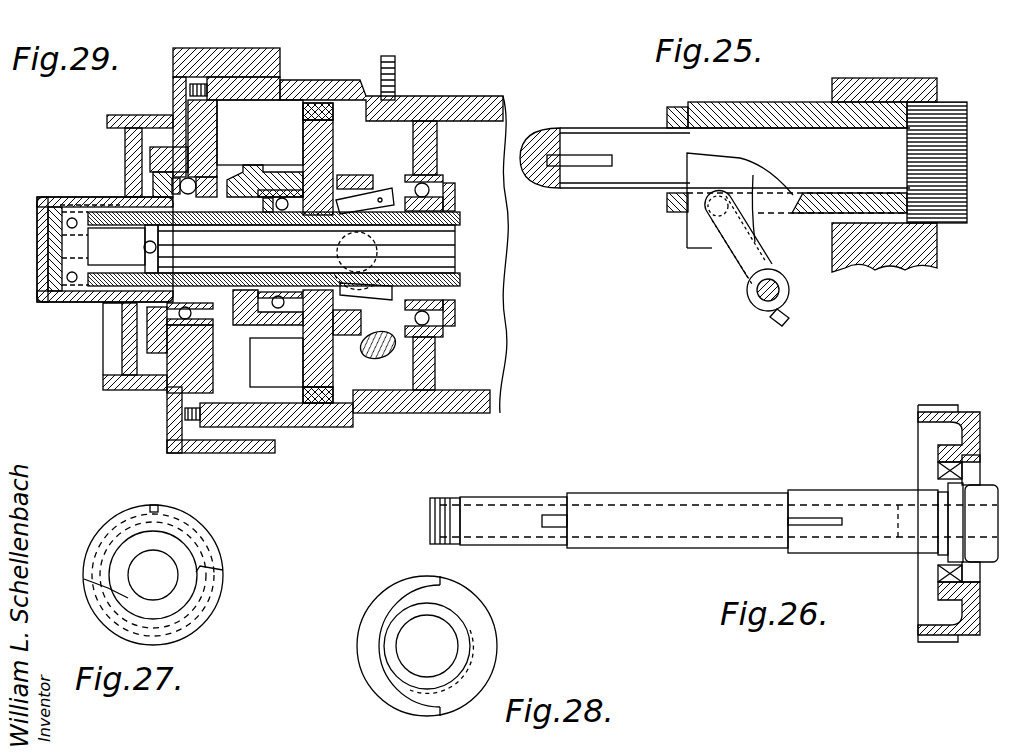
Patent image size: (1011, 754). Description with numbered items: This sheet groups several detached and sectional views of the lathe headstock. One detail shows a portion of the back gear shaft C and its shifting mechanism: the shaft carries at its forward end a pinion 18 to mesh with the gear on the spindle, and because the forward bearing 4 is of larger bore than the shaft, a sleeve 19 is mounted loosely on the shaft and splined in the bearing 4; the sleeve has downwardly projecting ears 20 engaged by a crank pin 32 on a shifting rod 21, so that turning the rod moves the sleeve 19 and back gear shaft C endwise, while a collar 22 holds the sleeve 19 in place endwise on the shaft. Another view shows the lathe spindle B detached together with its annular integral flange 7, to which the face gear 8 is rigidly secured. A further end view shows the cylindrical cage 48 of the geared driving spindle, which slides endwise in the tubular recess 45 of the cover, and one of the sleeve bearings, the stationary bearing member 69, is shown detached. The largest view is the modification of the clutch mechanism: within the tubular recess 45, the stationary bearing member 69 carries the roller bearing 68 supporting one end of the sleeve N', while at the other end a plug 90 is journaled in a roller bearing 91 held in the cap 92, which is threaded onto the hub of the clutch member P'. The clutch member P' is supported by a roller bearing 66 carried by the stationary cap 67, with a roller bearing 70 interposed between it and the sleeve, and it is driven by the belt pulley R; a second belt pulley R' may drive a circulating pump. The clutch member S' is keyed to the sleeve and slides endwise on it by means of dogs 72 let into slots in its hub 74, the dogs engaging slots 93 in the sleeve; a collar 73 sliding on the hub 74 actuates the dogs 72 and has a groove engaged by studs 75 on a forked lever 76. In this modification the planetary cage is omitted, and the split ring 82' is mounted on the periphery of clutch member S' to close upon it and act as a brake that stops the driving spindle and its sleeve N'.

In FIG. 29, the stationary bearing member 69 is at (452, 104).
In FIG. 28, the stationary bearing member 69 is at (380, 668).
In FIG. 29, the clutch member P' is at (234, 127).
In FIG. 29, the clutch member S' is at (265, 166).
In FIG. 29, the split ring 82' is at (291, 246).
In FIG. 29, the collar 73 is at (368, 175).
In FIG. 29, the dogs 72 is at (370, 197).
In FIG. 29, the sleeve N' is at (466, 203).
In FIG. 29, the studs 75 is at (430, 237).
In FIG. 29, the slots 93 is at (378, 262).
In FIG. 29, the cap 92 is at (55, 304).
In FIG. 29, the roller bearing 91 is at (55, 287).
In FIG. 29, the plug 90 is at (116, 246).
In FIG. 29, the roller bearing 70 is at (262, 330).
In FIG. 29, the hub 74 is at (390, 345).
In FIG. 29, the forked lever 76 is at (380, 335).
In FIG. 29, the roller bearing 68 is at (436, 335).
In FIG. 29, the roller bearing 66 is at (213, 350).
In FIG. 29, the stationary cap 67 is at (213, 375).
In FIG. 29, the tubular recess 45 is at (472, 390).
In FIG. 29, the belt pulley R is at (221, 442).
In FIG. 29, the belt pulley R' is at (133, 370).
In FIG. 25, the back gear shaft C is at (600, 125).
In FIG. 25, the sleeve 19 is at (786, 90).
In FIG. 25, the forward bearing 4 is at (870, 97).
In FIG. 26, the forward bearing 4 is at (975, 465).
In FIG. 25, the pinion 18 is at (952, 100).
In FIG. 25, the collar 22 is at (664, 205).
In FIG. 25, the ears 20 is at (685, 230).
In FIG. 25, the crank pin 32 is at (712, 262).
In FIG. 25, the shifting rod 21 is at (746, 302).
In FIG. 26, the lathe spindle B is at (700, 495).
In FIG. 26, the face gear 8 is at (982, 432).
In FIG. 26, the annular integral flange 7 is at (955, 532).
In FIG. 27, the cylindrical cage 48 is at (207, 535).